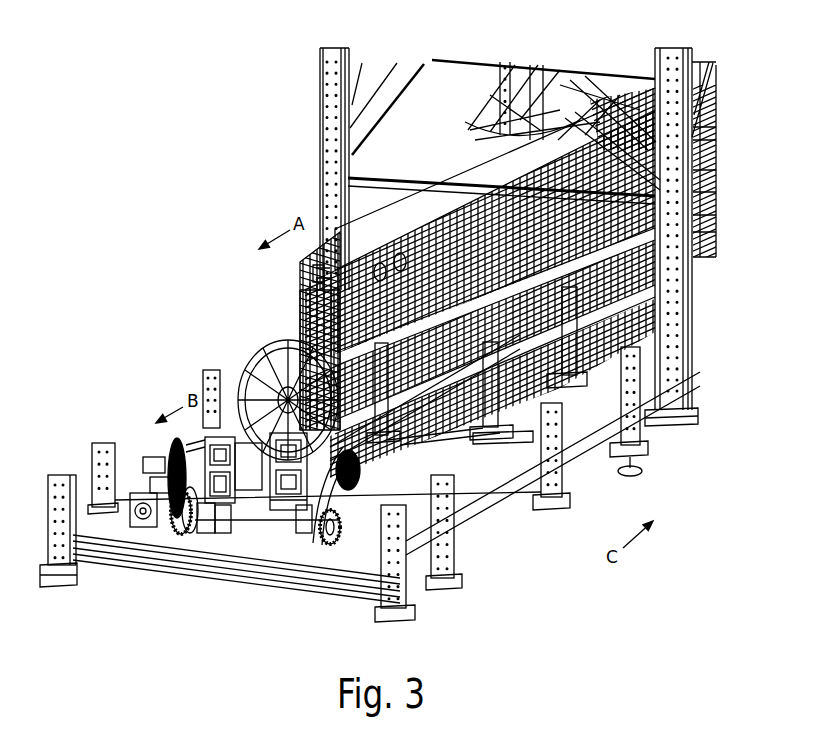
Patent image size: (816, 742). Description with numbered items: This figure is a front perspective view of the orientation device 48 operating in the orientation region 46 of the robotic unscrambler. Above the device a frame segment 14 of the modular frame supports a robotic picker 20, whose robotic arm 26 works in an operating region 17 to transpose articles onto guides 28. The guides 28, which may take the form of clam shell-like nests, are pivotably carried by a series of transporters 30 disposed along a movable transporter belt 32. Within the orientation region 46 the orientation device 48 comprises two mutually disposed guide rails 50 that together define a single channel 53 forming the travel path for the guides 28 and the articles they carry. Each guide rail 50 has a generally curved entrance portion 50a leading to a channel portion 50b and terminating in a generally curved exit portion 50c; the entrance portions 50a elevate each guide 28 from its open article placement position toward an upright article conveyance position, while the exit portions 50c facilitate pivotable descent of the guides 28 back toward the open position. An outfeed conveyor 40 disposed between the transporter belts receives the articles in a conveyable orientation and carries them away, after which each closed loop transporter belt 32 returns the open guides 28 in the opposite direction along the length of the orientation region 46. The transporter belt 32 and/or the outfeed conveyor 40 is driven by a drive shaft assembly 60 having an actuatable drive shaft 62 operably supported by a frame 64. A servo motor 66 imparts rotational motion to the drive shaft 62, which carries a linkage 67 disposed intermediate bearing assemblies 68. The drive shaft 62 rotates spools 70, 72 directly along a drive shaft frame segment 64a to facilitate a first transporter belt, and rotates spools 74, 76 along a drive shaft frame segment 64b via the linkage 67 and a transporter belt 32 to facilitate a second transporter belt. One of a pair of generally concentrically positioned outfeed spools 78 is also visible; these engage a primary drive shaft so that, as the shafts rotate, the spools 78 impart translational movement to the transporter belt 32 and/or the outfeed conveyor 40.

The frame segment 14 is at (326, 98).
The operating region 17 is at (505, 135).
The robotic picker 20 is at (497, 128).
The robotic arm 26 is at (714, 160).
The guide 28 is at (283, 366).
The transporter 30 is at (380, 272).
The transporter belt 32 is at (677, 424).
The outfeed conveyor 40 is at (240, 390).
The orientation region 46 is at (115, 252).
The orientation device 48 is at (300, 322).
The guide rail 50 is at (300, 312).
The entrance portion 50a is at (470, 272).
The channel portion 50b is at (520, 500).
The exit portion 50c is at (520, 512).
The channel 53 is at (312, 280).
The drive shaft assembly 60 is at (175, 449).
The drive shaft 62 is at (227, 523).
The frame 64 is at (165, 530).
The drive shaft frame segment 64a is at (150, 483).
The drive shaft frame segment 64b is at (420, 560).
The servo motor 66 is at (100, 478).
The linkage 67 is at (247, 527).
The bearing assembly 68 is at (200, 523).
The spool 70 is at (178, 447).
The spool 72 is at (160, 520).
The spool 74 is at (445, 529).
The spool 76 is at (440, 586).
The outfeed spool 78 is at (318, 532).